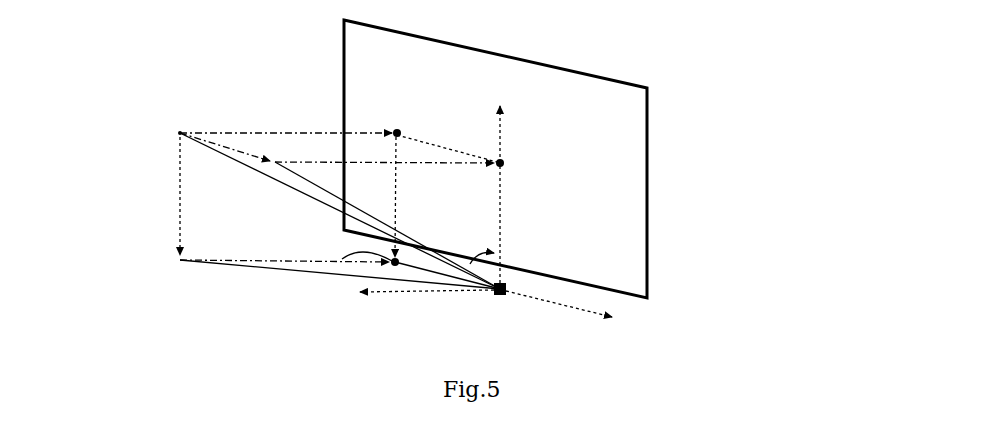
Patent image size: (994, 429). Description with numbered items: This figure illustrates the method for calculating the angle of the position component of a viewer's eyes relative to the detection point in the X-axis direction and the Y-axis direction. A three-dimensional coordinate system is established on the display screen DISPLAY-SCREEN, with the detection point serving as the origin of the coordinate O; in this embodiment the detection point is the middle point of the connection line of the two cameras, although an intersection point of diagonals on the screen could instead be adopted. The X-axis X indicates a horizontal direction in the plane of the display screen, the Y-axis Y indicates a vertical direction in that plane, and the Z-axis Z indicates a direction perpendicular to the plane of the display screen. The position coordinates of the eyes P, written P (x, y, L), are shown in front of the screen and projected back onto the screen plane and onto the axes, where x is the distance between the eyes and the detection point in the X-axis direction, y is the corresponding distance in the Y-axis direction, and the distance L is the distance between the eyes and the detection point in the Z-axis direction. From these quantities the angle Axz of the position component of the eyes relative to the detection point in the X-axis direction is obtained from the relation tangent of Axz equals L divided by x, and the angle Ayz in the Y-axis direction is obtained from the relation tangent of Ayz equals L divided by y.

The display screen DISPLAY-SCREEN is at (660, 124).
The position coordinates of the eyes P is at (158, 168).
The distance in the Z-axis direction L is at (292, 117).
The X-axis X is at (578, 313).
The Y-axis Y is at (500, 185).
The Z-axis Z is at (421, 302).
The origin of the coordinate O is at (507, 312).
The angle of the position component of the eyes in the Y-axis direction Ayz is at (477, 247).
The angle of the position component of the eyes in the X-axis direction Axz is at (326, 262).